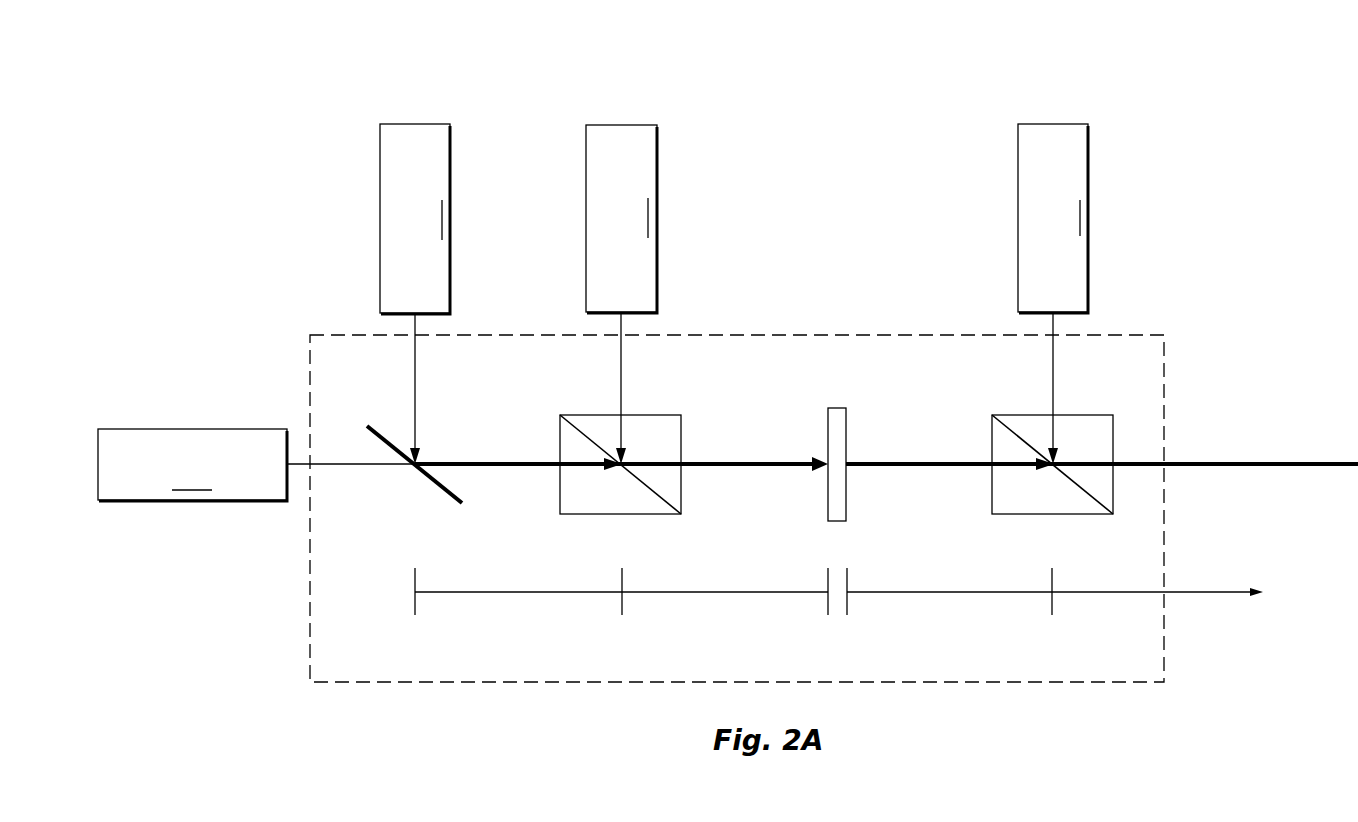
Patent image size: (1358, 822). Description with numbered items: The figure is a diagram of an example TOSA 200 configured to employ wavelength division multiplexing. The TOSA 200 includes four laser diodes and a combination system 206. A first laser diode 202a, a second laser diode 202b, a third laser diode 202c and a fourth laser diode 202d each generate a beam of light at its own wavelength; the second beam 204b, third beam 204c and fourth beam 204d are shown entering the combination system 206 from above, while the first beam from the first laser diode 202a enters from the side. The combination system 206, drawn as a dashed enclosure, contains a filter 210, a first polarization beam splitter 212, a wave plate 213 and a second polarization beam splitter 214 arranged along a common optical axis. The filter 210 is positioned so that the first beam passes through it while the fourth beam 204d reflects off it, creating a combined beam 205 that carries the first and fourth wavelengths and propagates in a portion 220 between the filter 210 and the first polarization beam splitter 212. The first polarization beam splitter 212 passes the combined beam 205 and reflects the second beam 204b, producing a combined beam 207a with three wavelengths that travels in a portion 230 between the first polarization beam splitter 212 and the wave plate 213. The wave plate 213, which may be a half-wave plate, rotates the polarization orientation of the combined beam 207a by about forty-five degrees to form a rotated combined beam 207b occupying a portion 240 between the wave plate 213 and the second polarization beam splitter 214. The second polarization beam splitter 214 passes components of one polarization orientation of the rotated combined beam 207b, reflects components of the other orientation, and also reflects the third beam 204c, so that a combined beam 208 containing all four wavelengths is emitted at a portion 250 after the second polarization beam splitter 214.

The TOSA 200 is at (240, 86).
The first laser diode 202a is at (256, 465).
The second laser diode 202b is at (621, 219).
The third laser diode 202c is at (1053, 218).
The fourth laser diode 202d is at (415, 219).
The second beam 204b is at (626, 374).
The third beam 204c is at (1058, 374).
The fourth beam 204d is at (420, 374).
The combined beam 205 is at (512, 474).
The combination system 206 is at (838, 330).
The combined beam 207a is at (768, 474).
The rotated combined beam 207b is at (938, 474).
The combined beam 208 is at (1287, 474).
The filter 210 is at (428, 483).
The first polarization beam splitter 212 is at (667, 522).
The wave plate 213 is at (838, 406).
The second polarization beam splitter 214 is at (1075, 522).
The portion 220 is at (512, 601).
The portion 230 is at (758, 601).
The portion 240 is at (928, 601).
The portion 250 is at (1202, 600).